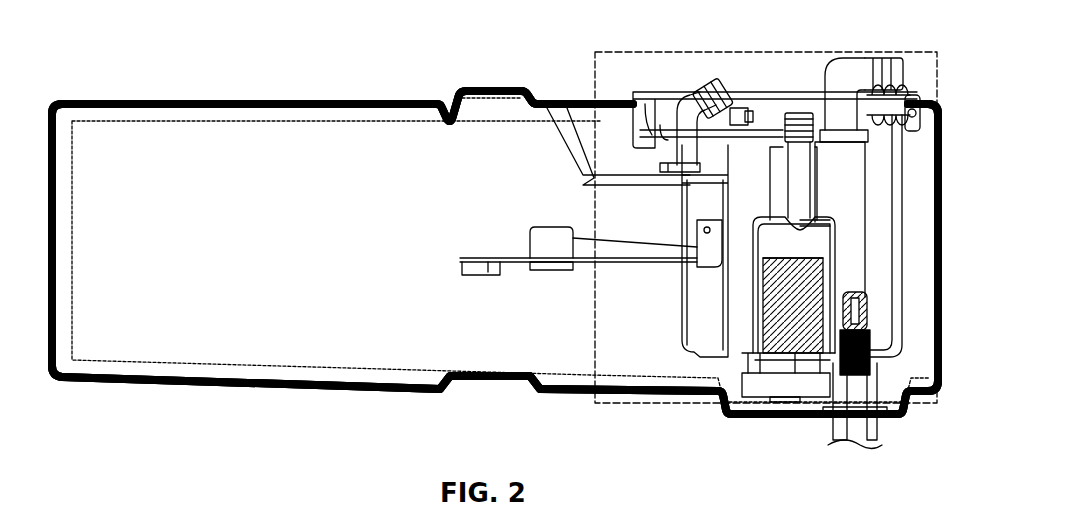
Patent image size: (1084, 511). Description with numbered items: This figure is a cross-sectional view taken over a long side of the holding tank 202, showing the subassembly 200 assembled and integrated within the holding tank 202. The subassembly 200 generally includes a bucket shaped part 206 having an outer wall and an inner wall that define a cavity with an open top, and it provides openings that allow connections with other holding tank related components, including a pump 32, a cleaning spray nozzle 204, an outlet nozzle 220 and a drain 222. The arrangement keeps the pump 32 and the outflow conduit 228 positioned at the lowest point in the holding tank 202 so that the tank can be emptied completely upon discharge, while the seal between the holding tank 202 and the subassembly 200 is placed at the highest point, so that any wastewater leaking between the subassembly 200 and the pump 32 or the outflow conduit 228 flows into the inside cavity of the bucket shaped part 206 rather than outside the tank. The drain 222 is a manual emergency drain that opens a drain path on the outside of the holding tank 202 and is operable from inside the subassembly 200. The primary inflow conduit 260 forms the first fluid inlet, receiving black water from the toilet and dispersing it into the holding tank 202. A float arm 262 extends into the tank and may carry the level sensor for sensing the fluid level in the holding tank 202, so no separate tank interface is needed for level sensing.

The subassembly 200 is at (686, 50).
The holding tank 202 is at (280, 96).
The cleaning spray nozzle 204 is at (686, 110).
The bucket shaped part 206 is at (757, 315).
The outlet nozzle 220 is at (855, 72).
The drain 222 is at (917, 437).
The outflow conduit 228 is at (937, 120).
The primary inflow conduit 260 is at (800, 110).
The float arm 262 is at (528, 243).
The pump 32 is at (917, 437).